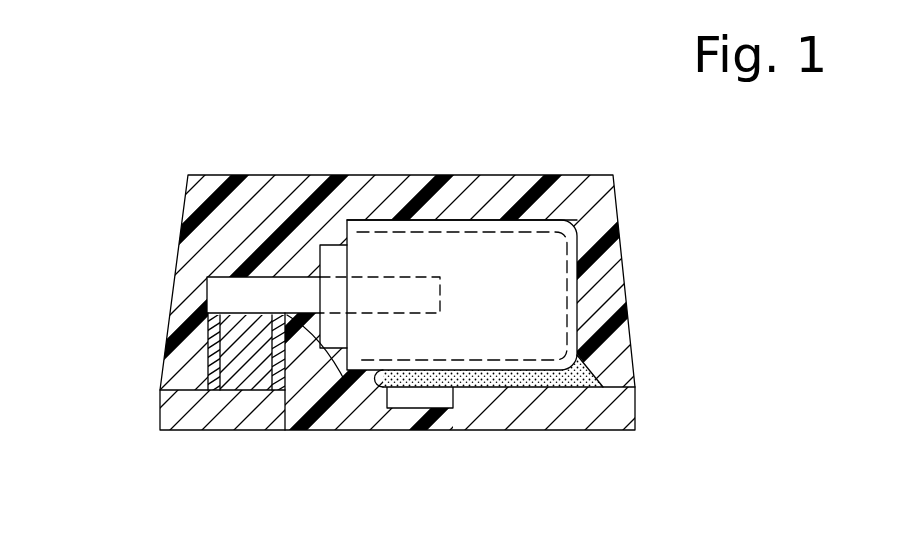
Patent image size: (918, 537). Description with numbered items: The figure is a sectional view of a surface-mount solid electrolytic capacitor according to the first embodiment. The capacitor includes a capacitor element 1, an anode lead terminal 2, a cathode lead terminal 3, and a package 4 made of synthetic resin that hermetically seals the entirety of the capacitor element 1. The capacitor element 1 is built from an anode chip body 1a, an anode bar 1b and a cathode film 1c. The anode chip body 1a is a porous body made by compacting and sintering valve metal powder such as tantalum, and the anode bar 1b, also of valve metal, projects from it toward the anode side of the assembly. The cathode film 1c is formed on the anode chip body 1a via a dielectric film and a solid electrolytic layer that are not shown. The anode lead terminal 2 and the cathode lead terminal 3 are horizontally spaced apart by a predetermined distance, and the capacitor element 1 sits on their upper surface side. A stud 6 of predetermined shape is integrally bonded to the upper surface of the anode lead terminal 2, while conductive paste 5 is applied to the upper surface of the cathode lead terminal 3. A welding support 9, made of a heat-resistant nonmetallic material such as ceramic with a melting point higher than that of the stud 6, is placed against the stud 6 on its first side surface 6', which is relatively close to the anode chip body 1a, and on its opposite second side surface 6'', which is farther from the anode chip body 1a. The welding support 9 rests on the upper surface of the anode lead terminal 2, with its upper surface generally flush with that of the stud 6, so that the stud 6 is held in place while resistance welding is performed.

The capacitor element 1 is at (504, 268).
The anode chip body 1a is at (460, 270).
The anode bar 1b is at (260, 297).
The cathode film 1c is at (387, 220).
The anode lead terminal 2 is at (222, 408).
The cathode lead terminal 3 is at (605, 418).
The package 4 is at (623, 250).
The conductive paste 5 is at (605, 378).
The stud 6 is at (285, 300).
The first side surface 6' is at (307, 414).
The second side surface 6'' is at (143, 305).
The welding support 9 is at (175, 300).